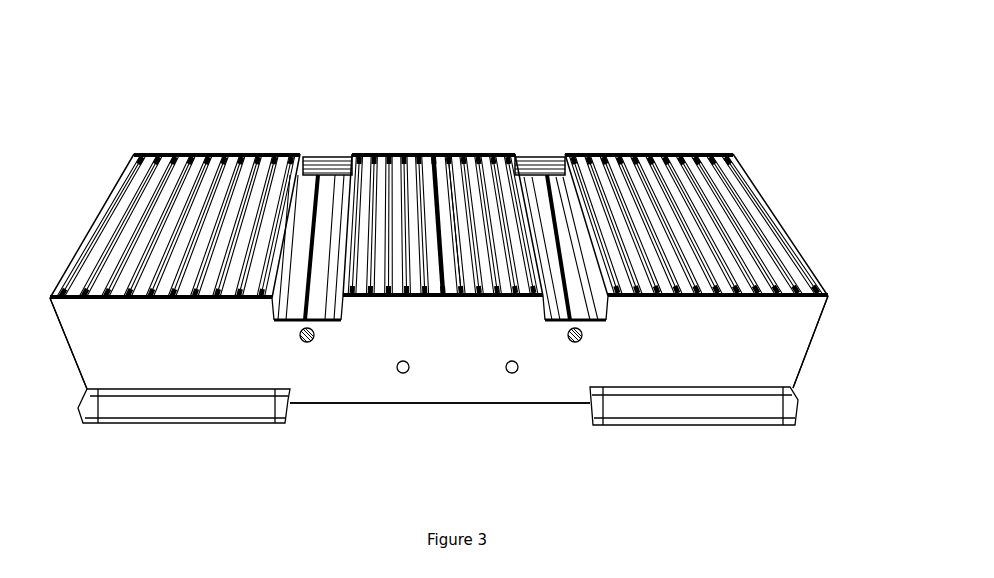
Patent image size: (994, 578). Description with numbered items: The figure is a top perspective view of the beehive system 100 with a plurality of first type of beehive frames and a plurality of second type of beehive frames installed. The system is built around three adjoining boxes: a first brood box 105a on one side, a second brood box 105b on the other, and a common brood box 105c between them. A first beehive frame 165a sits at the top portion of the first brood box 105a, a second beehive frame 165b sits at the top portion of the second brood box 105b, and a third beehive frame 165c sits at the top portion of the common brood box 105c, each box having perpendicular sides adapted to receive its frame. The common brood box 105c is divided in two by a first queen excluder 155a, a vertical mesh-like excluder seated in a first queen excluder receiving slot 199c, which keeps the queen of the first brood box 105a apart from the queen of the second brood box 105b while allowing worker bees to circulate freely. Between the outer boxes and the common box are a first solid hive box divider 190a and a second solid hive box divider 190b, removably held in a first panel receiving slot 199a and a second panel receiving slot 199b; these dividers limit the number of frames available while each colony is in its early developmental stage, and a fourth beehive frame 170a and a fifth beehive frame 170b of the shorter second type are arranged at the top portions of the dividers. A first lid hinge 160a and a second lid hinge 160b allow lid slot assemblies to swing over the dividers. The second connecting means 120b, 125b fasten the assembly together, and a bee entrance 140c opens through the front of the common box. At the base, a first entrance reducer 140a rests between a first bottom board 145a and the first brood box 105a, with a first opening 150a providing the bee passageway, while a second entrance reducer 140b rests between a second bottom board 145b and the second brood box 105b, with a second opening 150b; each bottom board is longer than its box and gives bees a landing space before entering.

The beehive system 100 is at (138, 90).
The first brood box 105a is at (707, 350).
The second brood box 105b is at (233, 372).
The common brood box 105c is at (442, 340).
The second connecting means 120b is at (575, 345).
The second connecting means 125b is at (310, 345).
The first entrance reducer 140a is at (675, 390).
The second entrance reducer 140b is at (192, 393).
The bee entrance 140c is at (398, 362).
The first bottom board 145a is at (630, 418).
The second bottom board 145b is at (140, 417).
The first opening in the entrance reducer 150a is at (765, 390).
The second opening in the entrance reducer 150b is at (110, 390).
The first queen excluder 155a is at (447, 180).
The first lid hinge 160a is at (555, 157).
The second lid hinge 160b is at (342, 157).
The first beehive frame 165a is at (677, 207).
The second beehive frame 165b is at (230, 220).
The third beehive frame 165c is at (393, 190).
The fourth beehive frame 170a is at (570, 250).
The fifth beehive frame 170b is at (297, 247).
The first solid hive box divider 190a is at (575, 245).
The second solid hive box divider 190b is at (317, 197).
The first panel receiving slot 199a is at (540, 172).
The second panel receiving slot 199b is at (333, 172).
The first queen excluder receiving slot 199c is at (433, 200).